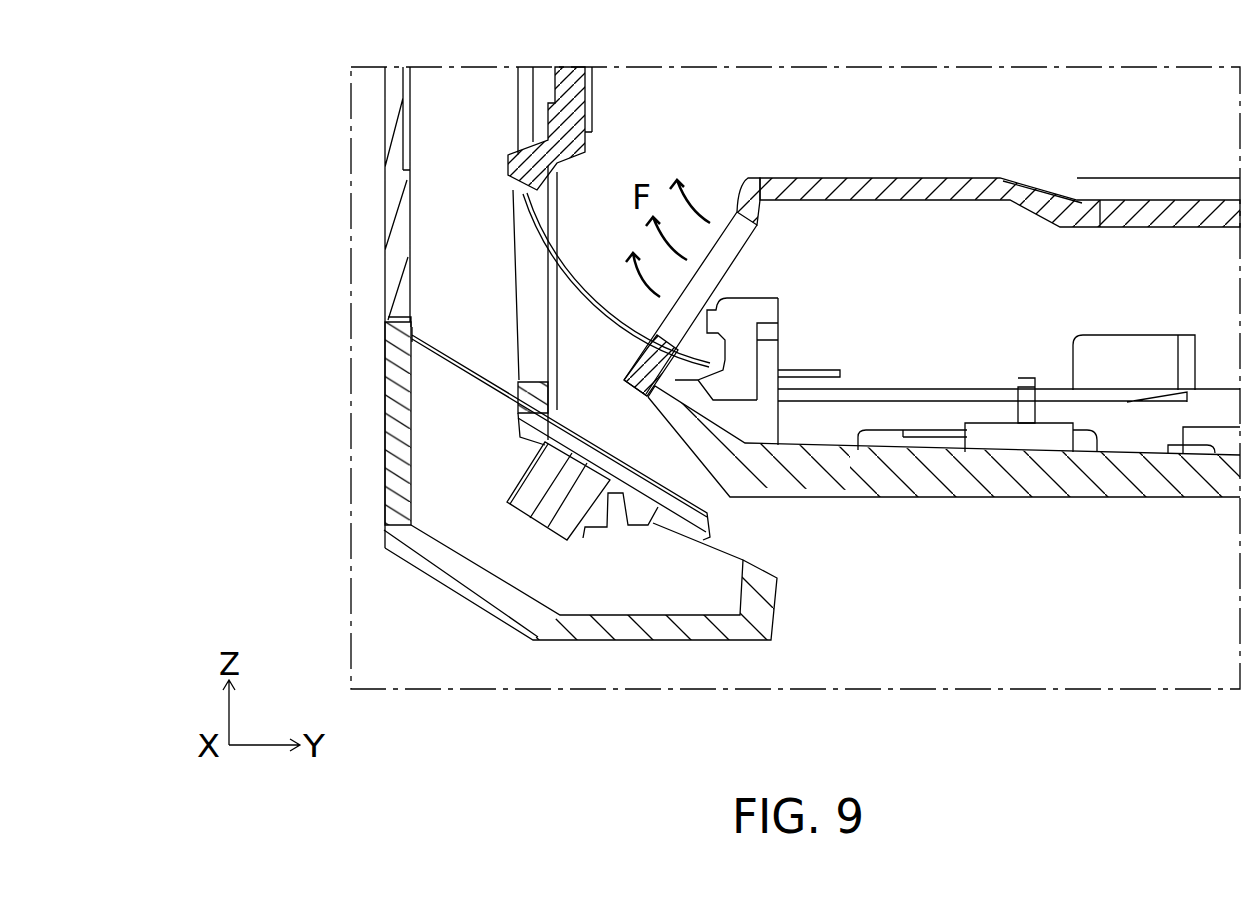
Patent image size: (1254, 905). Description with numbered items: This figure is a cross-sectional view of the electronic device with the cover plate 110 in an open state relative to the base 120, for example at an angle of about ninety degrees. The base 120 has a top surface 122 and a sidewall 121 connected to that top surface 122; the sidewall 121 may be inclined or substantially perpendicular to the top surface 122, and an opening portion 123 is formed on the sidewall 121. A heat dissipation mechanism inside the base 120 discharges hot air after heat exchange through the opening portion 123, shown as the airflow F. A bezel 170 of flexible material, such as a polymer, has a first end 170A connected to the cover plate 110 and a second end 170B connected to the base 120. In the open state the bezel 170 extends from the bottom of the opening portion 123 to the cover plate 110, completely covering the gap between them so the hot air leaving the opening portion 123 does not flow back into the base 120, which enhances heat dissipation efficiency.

The cover plate 110 is at (397, 248).
The base 120 is at (1008, 470).
The sidewall 121 is at (760, 173).
The top surface 122 is at (898, 187).
The opening portion 123 is at (726, 205).
The bezel 170 is at (590, 298).
The first end 170A is at (517, 190).
The second end 170B is at (829, 372).